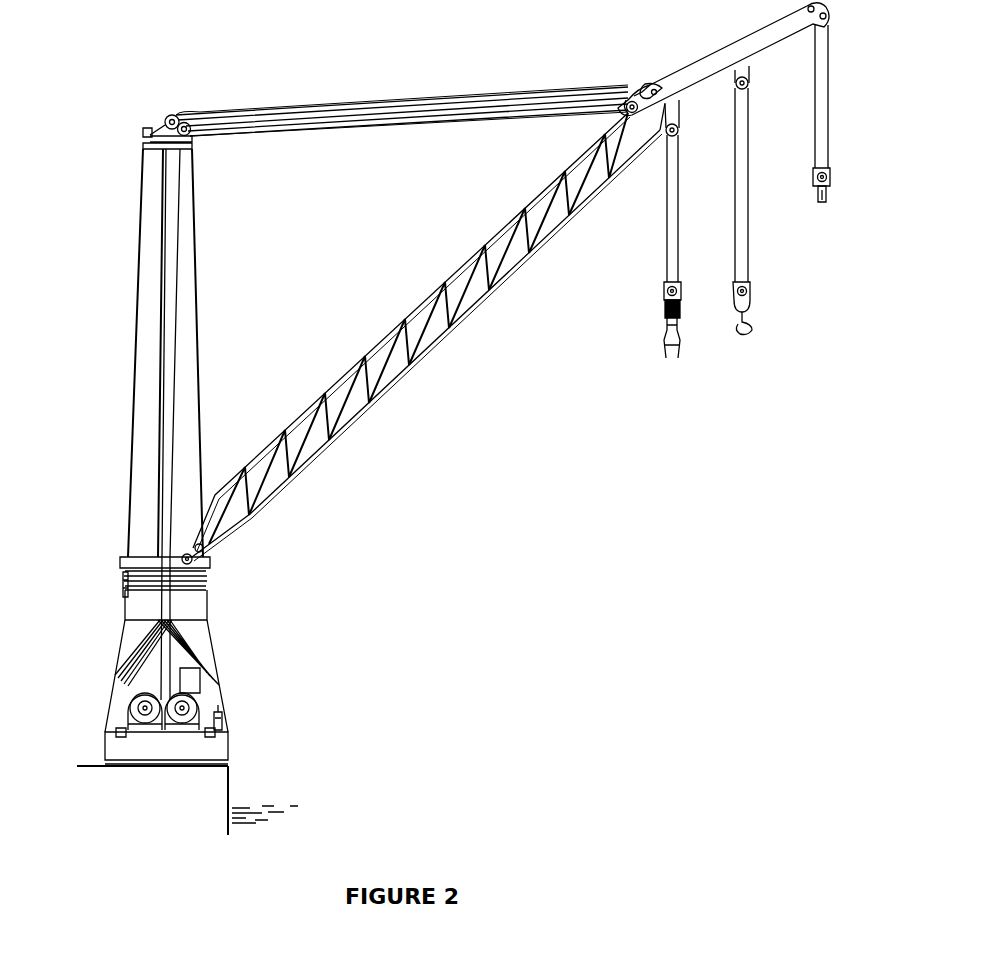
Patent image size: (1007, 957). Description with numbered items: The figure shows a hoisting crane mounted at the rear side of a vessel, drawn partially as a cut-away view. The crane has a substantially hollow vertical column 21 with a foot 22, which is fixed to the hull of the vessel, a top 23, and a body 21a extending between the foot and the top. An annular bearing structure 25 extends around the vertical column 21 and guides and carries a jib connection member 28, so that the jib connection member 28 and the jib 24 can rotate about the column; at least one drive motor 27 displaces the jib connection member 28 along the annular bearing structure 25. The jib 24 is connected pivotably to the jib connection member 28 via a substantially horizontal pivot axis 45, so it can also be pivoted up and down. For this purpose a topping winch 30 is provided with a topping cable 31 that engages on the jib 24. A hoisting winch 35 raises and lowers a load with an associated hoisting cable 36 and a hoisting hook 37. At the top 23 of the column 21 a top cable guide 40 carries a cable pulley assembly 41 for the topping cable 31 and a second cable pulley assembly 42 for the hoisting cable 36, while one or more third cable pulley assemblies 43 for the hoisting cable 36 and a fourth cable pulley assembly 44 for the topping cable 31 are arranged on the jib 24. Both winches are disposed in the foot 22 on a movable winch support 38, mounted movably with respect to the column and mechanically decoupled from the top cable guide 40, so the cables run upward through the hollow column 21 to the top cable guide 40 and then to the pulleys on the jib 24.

The vertical column 21 is at (155, 325).
The body 21a is at (197, 330).
The foot 22 is at (222, 690).
The top 23 is at (140, 138).
The jib 24 is at (374, 344).
The annular bearing structure 25 is at (223, 585).
The drive motor 27 is at (123, 593).
The jib connection member 28 is at (212, 563).
The topping winch 30 is at (213, 648).
The topping cable 31 is at (173, 393).
The hoisting winch 35 is at (130, 710).
The hoisting cable 36 is at (162, 473).
The hoisting hook 37 is at (668, 308).
The movable winch support 38 is at (128, 740).
The top cable guide 40 is at (178, 100).
The cable pulley assembly 41 is at (200, 118).
The second cable pulley assembly 42 is at (168, 114).
The third cable pulley assembly 43 is at (648, 88).
The fourth cable pulley assembly 44 is at (638, 92).
The pivot axis 45 is at (184, 558).